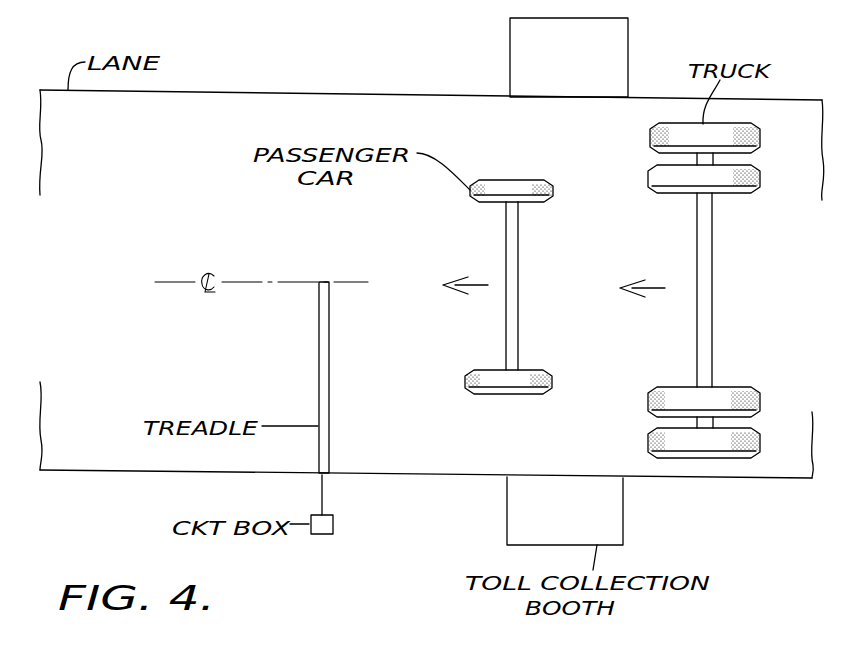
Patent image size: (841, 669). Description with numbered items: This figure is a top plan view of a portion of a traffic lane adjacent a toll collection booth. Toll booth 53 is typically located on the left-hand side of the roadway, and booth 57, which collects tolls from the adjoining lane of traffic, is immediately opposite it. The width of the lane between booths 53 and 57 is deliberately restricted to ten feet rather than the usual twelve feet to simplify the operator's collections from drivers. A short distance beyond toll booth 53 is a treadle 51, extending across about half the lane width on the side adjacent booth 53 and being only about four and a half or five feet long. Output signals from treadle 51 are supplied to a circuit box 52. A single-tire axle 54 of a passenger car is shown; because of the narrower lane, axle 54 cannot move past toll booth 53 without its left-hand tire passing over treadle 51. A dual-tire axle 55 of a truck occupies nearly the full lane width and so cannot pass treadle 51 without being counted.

The treadle 51 is at (330, 325).
The circuit box 52 is at (334, 525).
The toll booth 53 is at (615, 502).
The single-tire axle 54 is at (512, 238).
The dual-tire axle 55 is at (708, 225).
The booth 57 is at (510, 34).